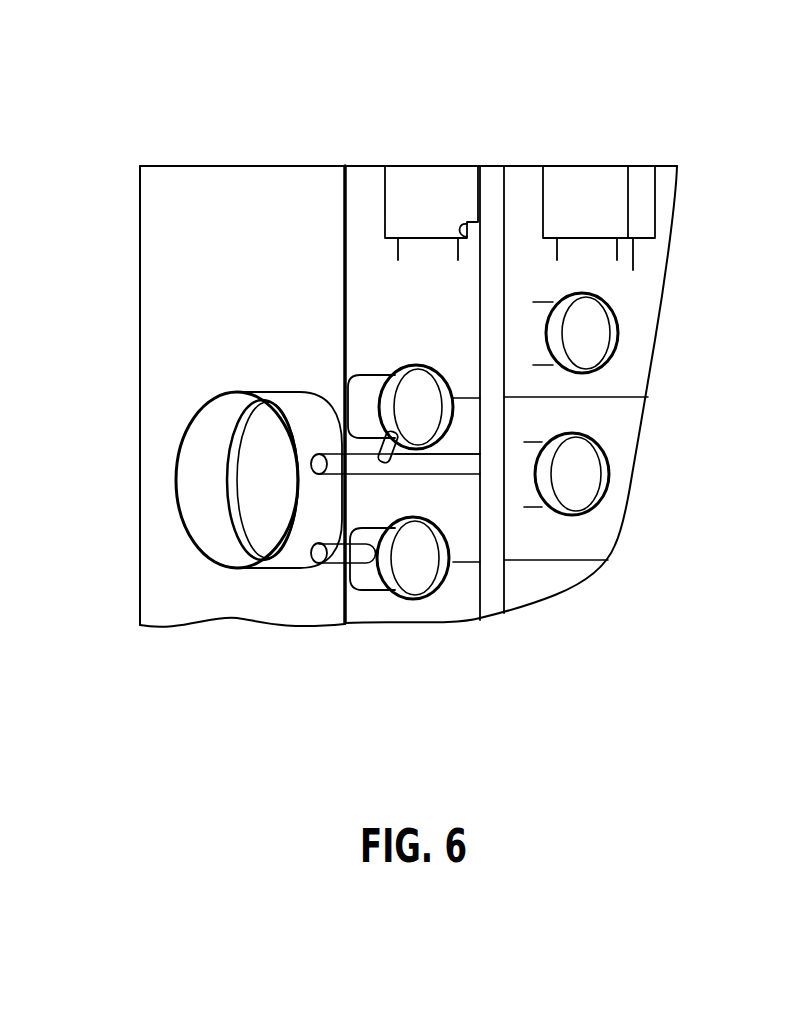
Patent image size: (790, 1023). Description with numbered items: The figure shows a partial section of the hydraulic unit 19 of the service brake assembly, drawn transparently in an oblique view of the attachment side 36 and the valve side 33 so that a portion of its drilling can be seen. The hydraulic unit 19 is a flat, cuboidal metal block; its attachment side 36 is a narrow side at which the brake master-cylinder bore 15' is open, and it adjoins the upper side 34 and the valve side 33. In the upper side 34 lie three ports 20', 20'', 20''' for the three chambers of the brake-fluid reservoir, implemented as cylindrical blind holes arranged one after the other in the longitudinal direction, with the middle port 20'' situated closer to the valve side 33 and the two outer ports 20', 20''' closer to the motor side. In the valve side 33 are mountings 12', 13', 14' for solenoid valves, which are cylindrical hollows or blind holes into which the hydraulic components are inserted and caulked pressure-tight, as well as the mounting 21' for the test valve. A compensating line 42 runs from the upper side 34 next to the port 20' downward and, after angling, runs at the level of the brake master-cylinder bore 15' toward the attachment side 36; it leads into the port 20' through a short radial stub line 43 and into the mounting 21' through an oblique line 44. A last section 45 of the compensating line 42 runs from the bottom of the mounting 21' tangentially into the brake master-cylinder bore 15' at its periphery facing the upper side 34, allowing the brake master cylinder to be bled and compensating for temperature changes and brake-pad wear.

The hydraulic unit 19 is at (225, 106).
The attachment side 36 is at (190, 243).
The last section of compensating line 45 is at (340, 398).
The mounting for test valve 21' is at (365, 356).
The oblique line 44 is at (385, 437).
The brake master-cylinder bore 15' is at (270, 480).
The mounting for solenoid valve 12' is at (399, 610).
The compensating line 42 is at (495, 425).
The valve side 33 is at (448, 328).
The mounting for solenoid valve 13' is at (626, 333).
The mounting for solenoid valve 14' is at (618, 474).
The port for brake-fluid reservoir 20' is at (431, 164).
The stub line 43 is at (459, 222).
The upper side 34 is at (527, 153).
The port for brake-fluid reservoir 20'' is at (585, 164).
The port for brake-fluid reservoir 20''' is at (650, 169).